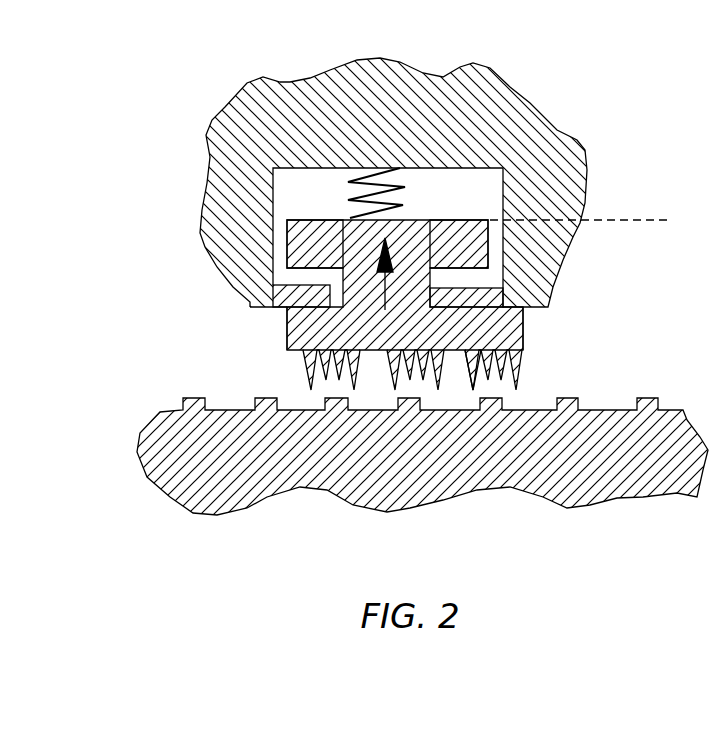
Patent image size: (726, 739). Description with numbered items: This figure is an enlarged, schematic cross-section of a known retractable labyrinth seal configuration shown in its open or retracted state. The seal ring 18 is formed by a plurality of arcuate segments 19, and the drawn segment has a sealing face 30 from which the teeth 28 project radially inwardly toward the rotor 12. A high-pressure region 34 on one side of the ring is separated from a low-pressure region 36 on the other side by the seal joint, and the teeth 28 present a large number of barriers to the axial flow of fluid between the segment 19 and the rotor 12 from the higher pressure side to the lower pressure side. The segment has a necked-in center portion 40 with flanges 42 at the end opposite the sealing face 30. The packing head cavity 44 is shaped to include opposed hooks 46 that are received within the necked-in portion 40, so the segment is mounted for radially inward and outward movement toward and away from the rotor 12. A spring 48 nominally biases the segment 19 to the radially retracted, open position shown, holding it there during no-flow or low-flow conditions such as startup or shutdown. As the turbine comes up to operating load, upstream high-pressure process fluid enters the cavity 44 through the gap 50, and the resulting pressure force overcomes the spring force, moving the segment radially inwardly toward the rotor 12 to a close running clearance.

The rotor 12 is at (607, 478).
The seal ring 18 is at (305, 218).
The arcuate segment 19 is at (343, 238).
The teeth 28 is at (523, 370).
The sealing face 30 is at (452, 360).
The high-pressure region 34 is at (266, 322).
The low-pressure region 36 is at (533, 327).
The necked-in center portion 40 is at (407, 290).
The flanges 42 is at (323, 242).
The packing head cavity 44 is at (467, 195).
The hooks 46 is at (305, 300).
The spring 48 is at (395, 194).
The gap 50 is at (337, 295).